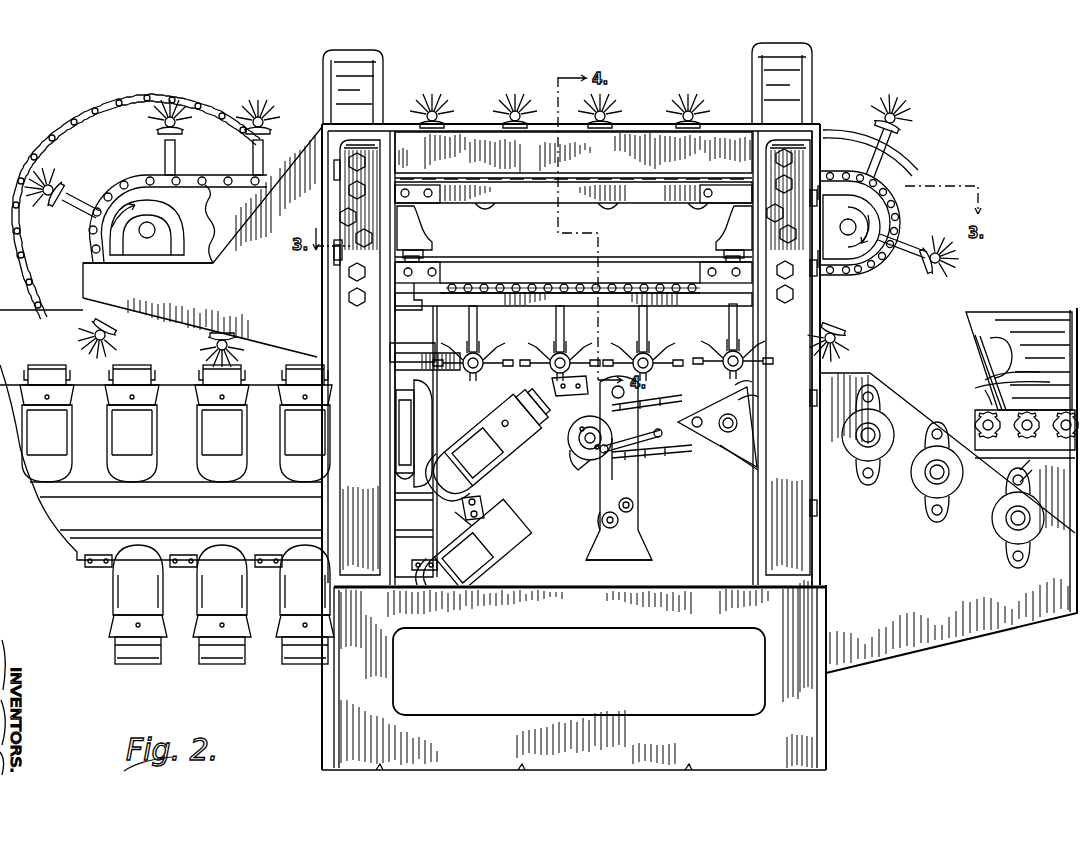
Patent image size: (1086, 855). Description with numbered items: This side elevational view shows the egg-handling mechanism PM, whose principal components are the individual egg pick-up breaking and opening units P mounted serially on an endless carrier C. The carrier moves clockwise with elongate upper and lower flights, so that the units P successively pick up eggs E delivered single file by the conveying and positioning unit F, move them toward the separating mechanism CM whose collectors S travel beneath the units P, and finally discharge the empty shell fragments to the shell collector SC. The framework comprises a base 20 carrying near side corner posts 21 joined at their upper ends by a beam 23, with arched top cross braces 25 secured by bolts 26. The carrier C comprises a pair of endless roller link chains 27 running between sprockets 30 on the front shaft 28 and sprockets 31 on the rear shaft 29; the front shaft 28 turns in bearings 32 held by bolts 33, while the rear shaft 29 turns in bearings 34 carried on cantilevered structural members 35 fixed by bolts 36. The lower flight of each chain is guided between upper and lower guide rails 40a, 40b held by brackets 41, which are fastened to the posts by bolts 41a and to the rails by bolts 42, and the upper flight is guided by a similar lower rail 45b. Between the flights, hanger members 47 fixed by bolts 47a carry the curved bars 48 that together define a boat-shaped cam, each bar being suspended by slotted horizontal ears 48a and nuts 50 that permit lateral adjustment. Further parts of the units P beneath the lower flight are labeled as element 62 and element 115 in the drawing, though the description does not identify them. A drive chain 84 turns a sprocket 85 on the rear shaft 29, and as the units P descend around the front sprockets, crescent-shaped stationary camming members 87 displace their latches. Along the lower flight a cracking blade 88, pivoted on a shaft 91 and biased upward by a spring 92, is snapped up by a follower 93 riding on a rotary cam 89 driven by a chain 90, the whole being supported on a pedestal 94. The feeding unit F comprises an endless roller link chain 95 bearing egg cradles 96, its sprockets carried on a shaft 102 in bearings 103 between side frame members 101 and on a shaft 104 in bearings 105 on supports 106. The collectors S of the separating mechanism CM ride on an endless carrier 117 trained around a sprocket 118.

The base 20 is at (838, 708).
The near side corner posts 21 is at (777, 520).
The beam 23 is at (645, 132).
The top cross brace 25 is at (798, 46).
The bolts 26 is at (770, 140).
The endless roller link chains 27 is at (922, 262).
The front shaft 28 is at (884, 270).
The rear shaft 29 is at (147, 240).
The sprockets 30 is at (846, 270).
The sprockets 31 is at (195, 222).
The bearings 32 is at (846, 214).
The bolts 33 is at (772, 270).
The bearings 34 is at (158, 220).
The structural members 35 is at (172, 323).
The bolts 36 is at (338, 255).
The upper guide rail 40a is at (625, 250).
The lower guide rail 40b is at (514, 306).
The brackets 41 is at (700, 268).
The bolts 41a is at (772, 290).
The bolts 42 is at (424, 283).
The lower rail 45b is at (488, 203).
The hanger members 47 is at (732, 214).
The bolts 47a is at (348, 217).
The curved bars 48 is at (620, 258).
The horizontal ears 48a is at (720, 250).
The nuts 50 is at (740, 258).
The feed finger 62 is at (486, 360).
The drive chain 84 is at (200, 140).
The sprocket 85 is at (108, 128).
The stationary camming members 87 is at (905, 158).
The cracking blade 88 is at (560, 398).
The rotary cam 89 is at (585, 468).
The chain 90 is at (686, 450).
The shaft 91 is at (640, 398).
The spring 92 is at (652, 428).
The follower 93 is at (650, 456).
The pedestal 94 is at (636, 522).
The endless roller link chain 95 is at (1045, 480).
The egg cradles 96 is at (740, 390).
The side frame members 101 is at (910, 640).
The shaft 102 is at (1012, 520).
The bearings 103 is at (1004, 545).
The shaft 104 is at (728, 428).
The bearings 105 is at (740, 428).
The supports 106 is at (757, 468).
The rod 115 is at (450, 370).
The endless carrier 117 is at (488, 513).
The sprocket 118 is at (470, 519).
The egg pick-up breaking and opening units P is at (945, 246).
The egg-handling mechanism PM is at (529, 86).
The endless carrier C is at (920, 199).
The collectors S is at (509, 471).
The eggs E is at (980, 391).
The shell collector SC is at (1031, 304).
The separating mechanism CM is at (93, 619).
The conveying and positioning unit F is at (1041, 635).